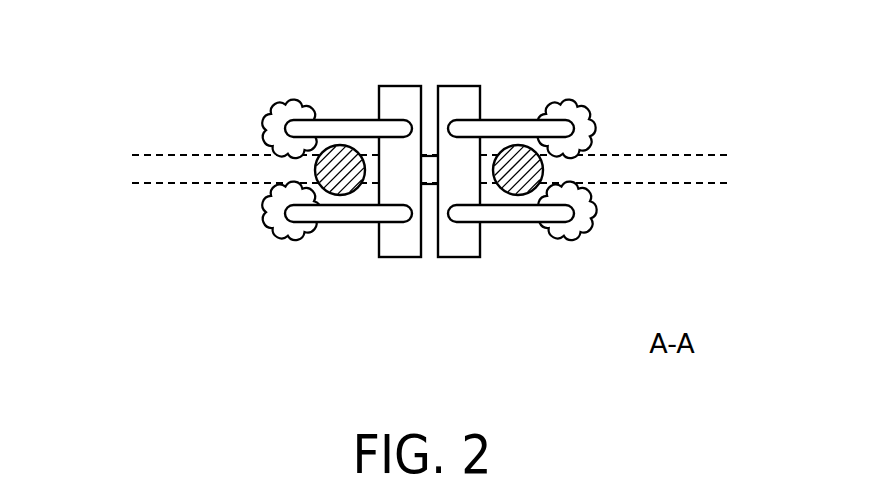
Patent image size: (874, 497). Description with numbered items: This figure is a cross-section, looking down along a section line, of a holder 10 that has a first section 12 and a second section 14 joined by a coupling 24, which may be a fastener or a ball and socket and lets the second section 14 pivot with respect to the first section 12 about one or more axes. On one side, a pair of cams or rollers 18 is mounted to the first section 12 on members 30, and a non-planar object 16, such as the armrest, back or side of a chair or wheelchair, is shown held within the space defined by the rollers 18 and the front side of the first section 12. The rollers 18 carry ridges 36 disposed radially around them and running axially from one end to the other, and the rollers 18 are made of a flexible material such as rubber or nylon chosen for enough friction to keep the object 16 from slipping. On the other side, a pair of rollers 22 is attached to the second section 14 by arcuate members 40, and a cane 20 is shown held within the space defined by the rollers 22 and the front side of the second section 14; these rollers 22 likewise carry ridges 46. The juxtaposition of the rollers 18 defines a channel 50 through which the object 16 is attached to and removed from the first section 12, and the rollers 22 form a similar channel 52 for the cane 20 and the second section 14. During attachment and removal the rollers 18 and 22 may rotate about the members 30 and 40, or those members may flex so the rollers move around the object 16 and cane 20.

The holder 10 is at (322, 322).
The first section 12 is at (390, 97).
The second section 14 is at (458, 243).
The non-planar object 16 is at (347, 155).
The cams (rollers) 18 is at (277, 238).
The cane 20 is at (508, 155).
The cams (rollers) 22 is at (582, 108).
The coupling 24 is at (428, 155).
The members 30 is at (330, 125).
The ridges 36 is at (252, 123).
The arcuate members 40 is at (527, 127).
The ridges 46 is at (602, 217).
The channel 50 is at (150, 170).
The channel 52 is at (707, 173).